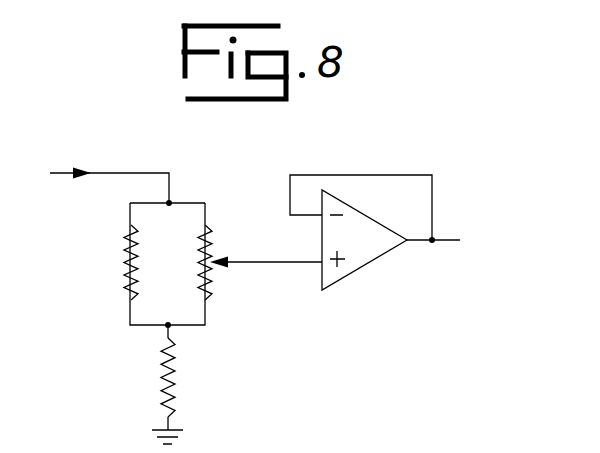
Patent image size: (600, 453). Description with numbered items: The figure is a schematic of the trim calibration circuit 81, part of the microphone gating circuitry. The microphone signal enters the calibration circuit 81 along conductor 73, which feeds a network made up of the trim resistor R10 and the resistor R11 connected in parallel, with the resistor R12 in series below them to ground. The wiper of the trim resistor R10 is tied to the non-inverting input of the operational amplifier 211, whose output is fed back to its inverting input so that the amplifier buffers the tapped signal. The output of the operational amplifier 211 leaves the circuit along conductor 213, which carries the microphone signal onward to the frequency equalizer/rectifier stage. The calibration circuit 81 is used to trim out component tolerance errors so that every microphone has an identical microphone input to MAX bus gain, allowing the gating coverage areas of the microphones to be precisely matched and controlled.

The conductor 73 is at (60, 173).
The trim calibration circuit 81 is at (243, 196).
The operational amplifier 211 is at (361, 259).
The conductor 213 is at (450, 240).
The trim resistor R10 is at (260, 262).
The resistor R11 is at (107, 262).
The resistor R12 is at (183, 384).